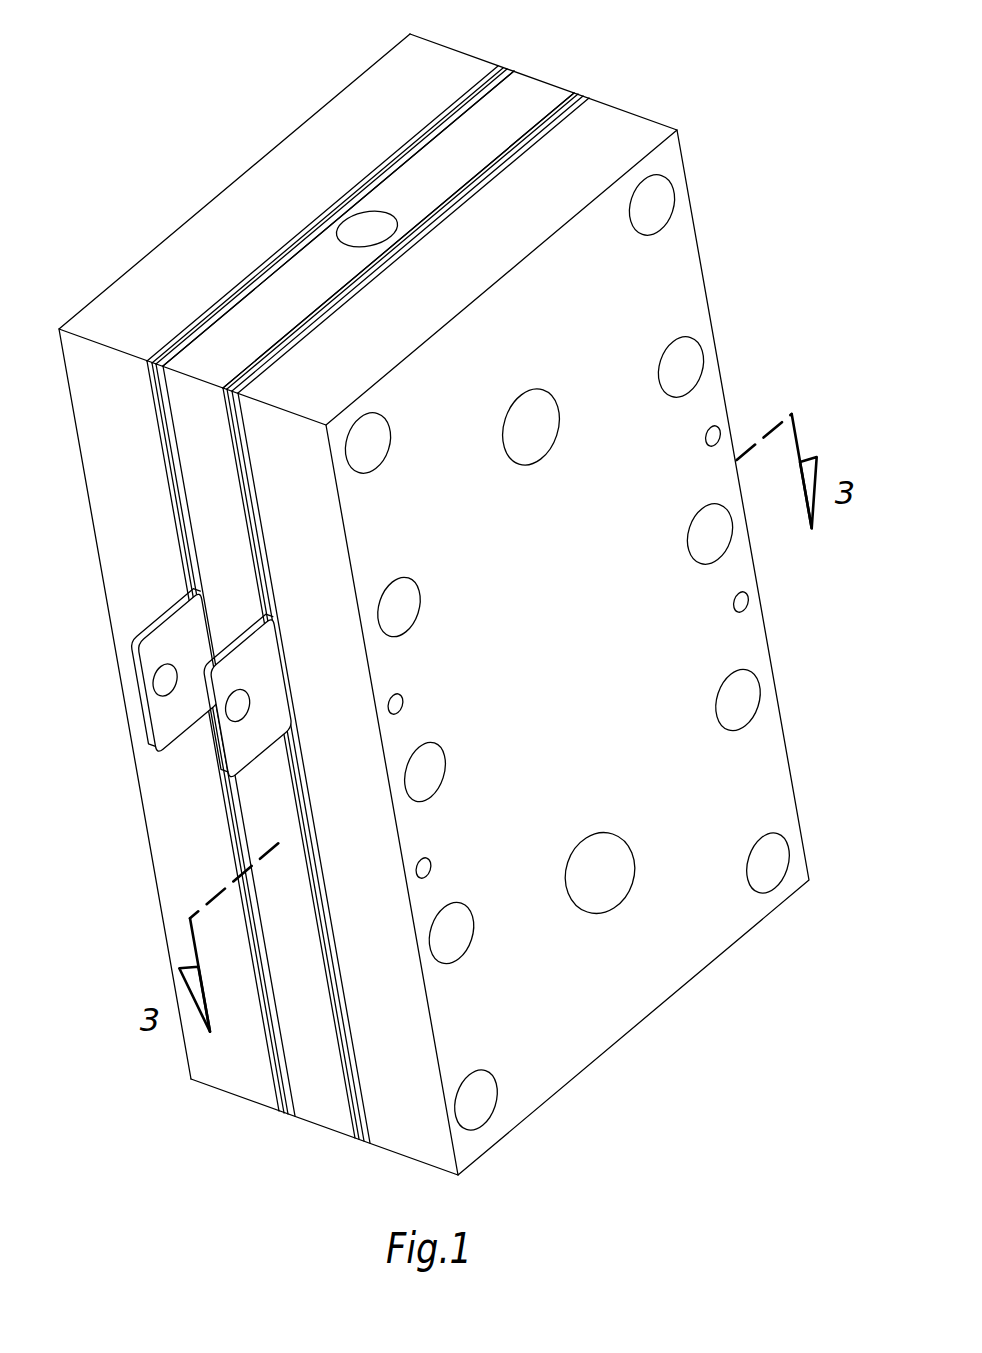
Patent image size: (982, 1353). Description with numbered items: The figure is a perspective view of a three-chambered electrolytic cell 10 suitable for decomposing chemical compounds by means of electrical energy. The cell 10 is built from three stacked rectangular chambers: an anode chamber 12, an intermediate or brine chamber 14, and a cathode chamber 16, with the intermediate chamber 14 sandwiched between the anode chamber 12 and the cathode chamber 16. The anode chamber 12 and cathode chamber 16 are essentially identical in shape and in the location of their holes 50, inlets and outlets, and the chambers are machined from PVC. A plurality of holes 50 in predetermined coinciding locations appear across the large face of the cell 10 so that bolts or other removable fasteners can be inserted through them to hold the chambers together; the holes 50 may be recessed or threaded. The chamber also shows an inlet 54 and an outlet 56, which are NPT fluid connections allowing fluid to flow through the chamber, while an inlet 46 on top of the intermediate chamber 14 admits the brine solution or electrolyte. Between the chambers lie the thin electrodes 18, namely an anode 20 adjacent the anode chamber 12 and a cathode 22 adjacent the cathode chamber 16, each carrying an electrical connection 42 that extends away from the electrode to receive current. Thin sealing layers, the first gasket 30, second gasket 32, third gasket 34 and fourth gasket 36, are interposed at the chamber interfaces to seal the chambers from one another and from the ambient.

The three-chambered electrolytic cell 10 is at (766, 157).
The anode chamber 12 is at (652, 135).
The intermediate chamber 14 is at (533, 88).
The cathode chamber 16 is at (317, 128).
The electrodes 18 is at (254, 280).
The anode 20 is at (578, 93).
The cathode 22 is at (505, 70).
The first gasket 30 is at (257, 513).
The second gasket 32 is at (242, 502).
The third gasket 34 is at (175, 447).
The fourth gasket 36 is at (157, 435).
The electrical connection 42 is at (170, 613).
The inlet 46 is at (366, 227).
The holes 50 is at (689, 363).
The inlet 54 is at (620, 887).
The outlet 56 is at (541, 450).